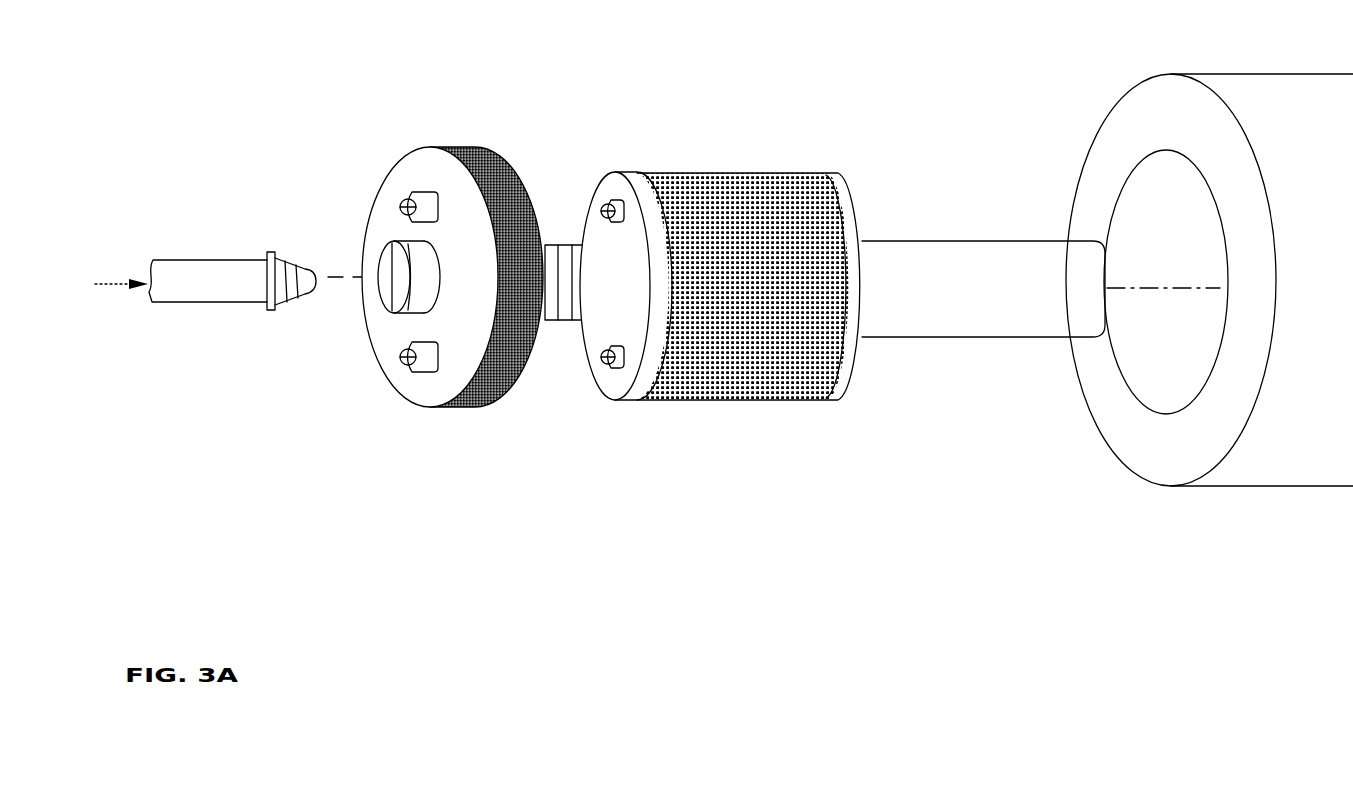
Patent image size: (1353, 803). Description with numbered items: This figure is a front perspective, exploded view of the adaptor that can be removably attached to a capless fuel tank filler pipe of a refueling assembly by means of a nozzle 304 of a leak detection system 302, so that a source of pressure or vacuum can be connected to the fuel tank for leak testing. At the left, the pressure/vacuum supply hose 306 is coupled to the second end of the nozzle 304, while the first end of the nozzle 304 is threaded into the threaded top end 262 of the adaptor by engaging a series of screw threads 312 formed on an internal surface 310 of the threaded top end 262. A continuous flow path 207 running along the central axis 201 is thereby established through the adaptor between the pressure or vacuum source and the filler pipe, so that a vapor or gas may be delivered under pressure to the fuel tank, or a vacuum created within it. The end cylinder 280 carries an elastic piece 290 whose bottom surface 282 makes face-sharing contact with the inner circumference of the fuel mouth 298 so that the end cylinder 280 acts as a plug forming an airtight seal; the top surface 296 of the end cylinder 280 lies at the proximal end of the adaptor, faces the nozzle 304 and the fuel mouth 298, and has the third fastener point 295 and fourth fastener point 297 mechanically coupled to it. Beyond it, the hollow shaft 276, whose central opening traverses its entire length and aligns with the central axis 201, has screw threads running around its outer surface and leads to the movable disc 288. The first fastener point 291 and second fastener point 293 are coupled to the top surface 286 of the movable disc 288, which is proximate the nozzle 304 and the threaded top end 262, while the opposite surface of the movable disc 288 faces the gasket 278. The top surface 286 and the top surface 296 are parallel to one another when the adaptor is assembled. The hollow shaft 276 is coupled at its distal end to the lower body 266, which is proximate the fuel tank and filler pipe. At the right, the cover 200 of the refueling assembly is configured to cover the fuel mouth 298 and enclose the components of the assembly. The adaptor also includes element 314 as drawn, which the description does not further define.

The cover 200 is at (1095, 192).
The central axis 201 is at (348, 273).
The continuous flow path 207 is at (116, 284).
The threaded top end 262 is at (410, 318).
The lower body 266 is at (983, 296).
The hollow shaft 276 is at (590, 293).
The gasket 278 is at (767, 310).
The end cylinder 280 is at (434, 481).
The bottom surface 282 is at (547, 373).
The top surface 286 is at (620, 185).
The movable disc 288 is at (746, 472).
The elastic piece 290 is at (512, 398).
The first fastener point 291 is at (604, 203).
The second fastener point 293 is at (608, 364).
The third fastener point 295 is at (410, 200).
The top surface 296 is at (402, 180).
The fourth fastener point 297 is at (403, 358).
The fuel mouth 298 is at (1118, 380).
The leak detection system 302 is at (234, 168).
The nozzle 304 is at (275, 252).
The pressure/vacuum supply hose 306 is at (229, 291).
The internal surface 310 is at (383, 257).
The screw threads 312 is at (393, 288).
The disk 314 is at (458, 407).